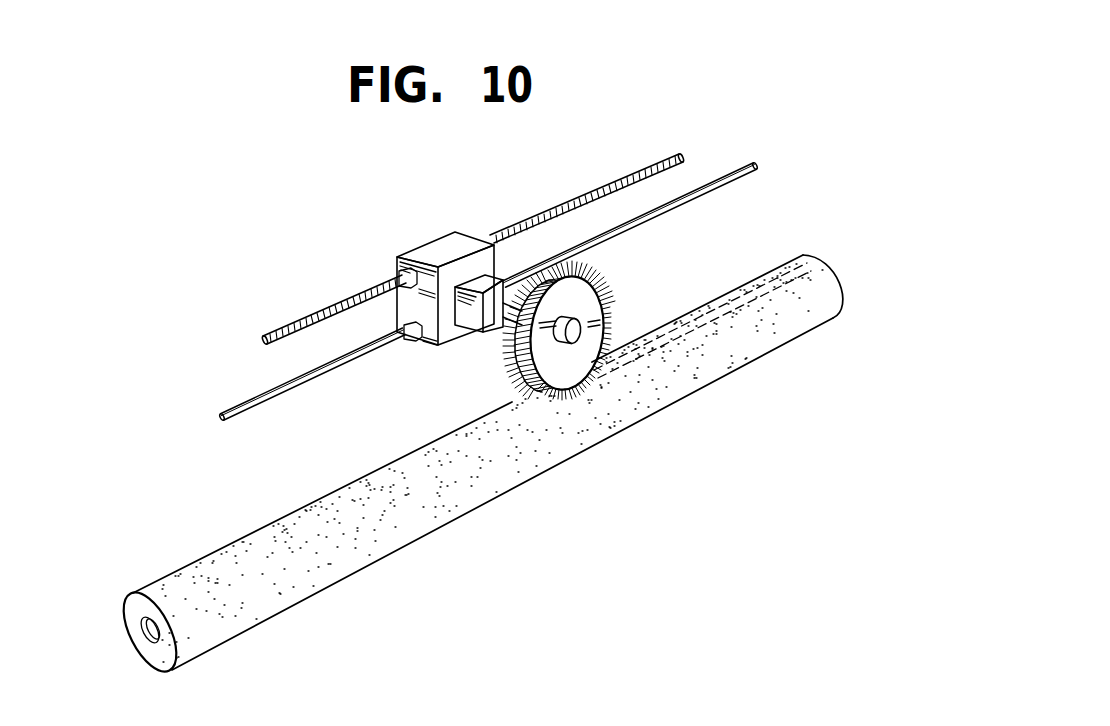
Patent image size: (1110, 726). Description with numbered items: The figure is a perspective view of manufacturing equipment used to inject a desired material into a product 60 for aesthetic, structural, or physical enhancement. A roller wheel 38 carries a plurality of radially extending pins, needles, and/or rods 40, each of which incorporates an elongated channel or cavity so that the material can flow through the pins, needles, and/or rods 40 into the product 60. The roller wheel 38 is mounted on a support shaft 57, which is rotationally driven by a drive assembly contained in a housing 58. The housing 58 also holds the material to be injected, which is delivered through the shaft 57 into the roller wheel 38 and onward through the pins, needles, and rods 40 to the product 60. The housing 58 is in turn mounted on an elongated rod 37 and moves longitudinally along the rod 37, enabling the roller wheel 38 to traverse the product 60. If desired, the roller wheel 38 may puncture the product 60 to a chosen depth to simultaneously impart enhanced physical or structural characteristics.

The elongated rod 37 is at (310, 377).
The roller wheel 38 is at (596, 322).
The pins, needles, and/or rods 40 is at (598, 275).
The support shaft 57 is at (505, 323).
The housing 58 is at (421, 252).
The product 60 is at (453, 490).